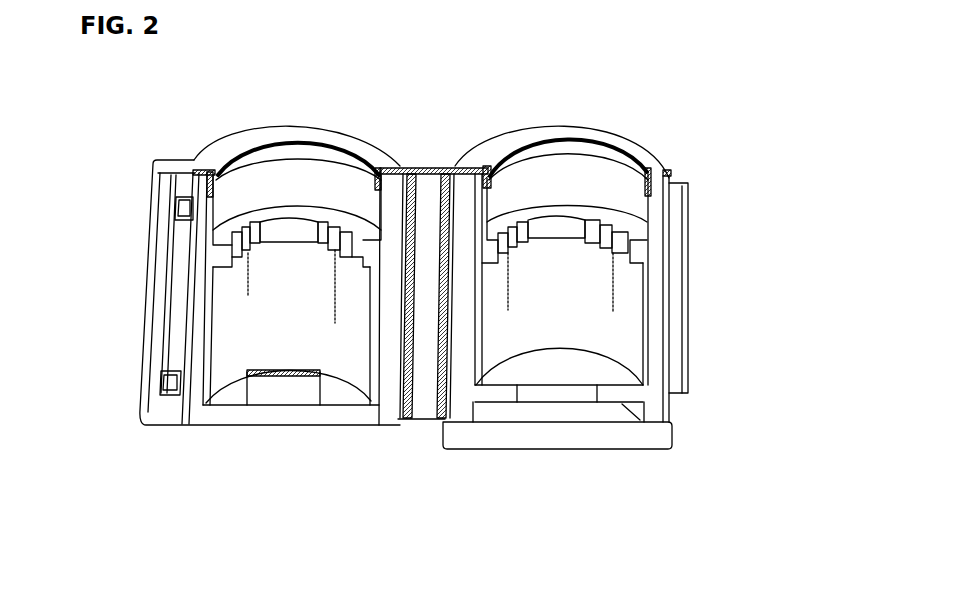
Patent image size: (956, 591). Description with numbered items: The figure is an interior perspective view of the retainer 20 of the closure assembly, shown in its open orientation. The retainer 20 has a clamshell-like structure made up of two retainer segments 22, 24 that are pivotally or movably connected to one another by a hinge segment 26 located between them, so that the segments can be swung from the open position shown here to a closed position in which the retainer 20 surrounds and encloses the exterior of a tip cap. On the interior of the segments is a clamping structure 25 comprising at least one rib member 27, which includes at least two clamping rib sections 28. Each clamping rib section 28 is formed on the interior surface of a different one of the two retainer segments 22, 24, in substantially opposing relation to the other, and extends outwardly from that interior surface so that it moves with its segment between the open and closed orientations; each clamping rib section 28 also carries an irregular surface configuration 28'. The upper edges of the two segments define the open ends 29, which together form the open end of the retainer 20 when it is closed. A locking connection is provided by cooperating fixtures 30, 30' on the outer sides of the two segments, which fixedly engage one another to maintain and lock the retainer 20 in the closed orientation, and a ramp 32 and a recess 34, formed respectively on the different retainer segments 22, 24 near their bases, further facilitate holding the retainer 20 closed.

The retainer 20 is at (708, 134).
The retainer segment 22 is at (320, 443).
The retainer segment 24 is at (558, 462).
The clamping structure 25 is at (252, 192).
The hinge segment 26 is at (428, 143).
The rib member 27 is at (307, 208).
The clamping rib section 28 is at (422, 272).
The irregular surface configuration 28' is at (428, 289).
The open end 29 is at (283, 148).
The locking fixture 30 is at (726, 288).
The locking fixture 30' is at (119, 285).
The ramp structure 32 is at (273, 380).
The recess structure 34 is at (590, 393).